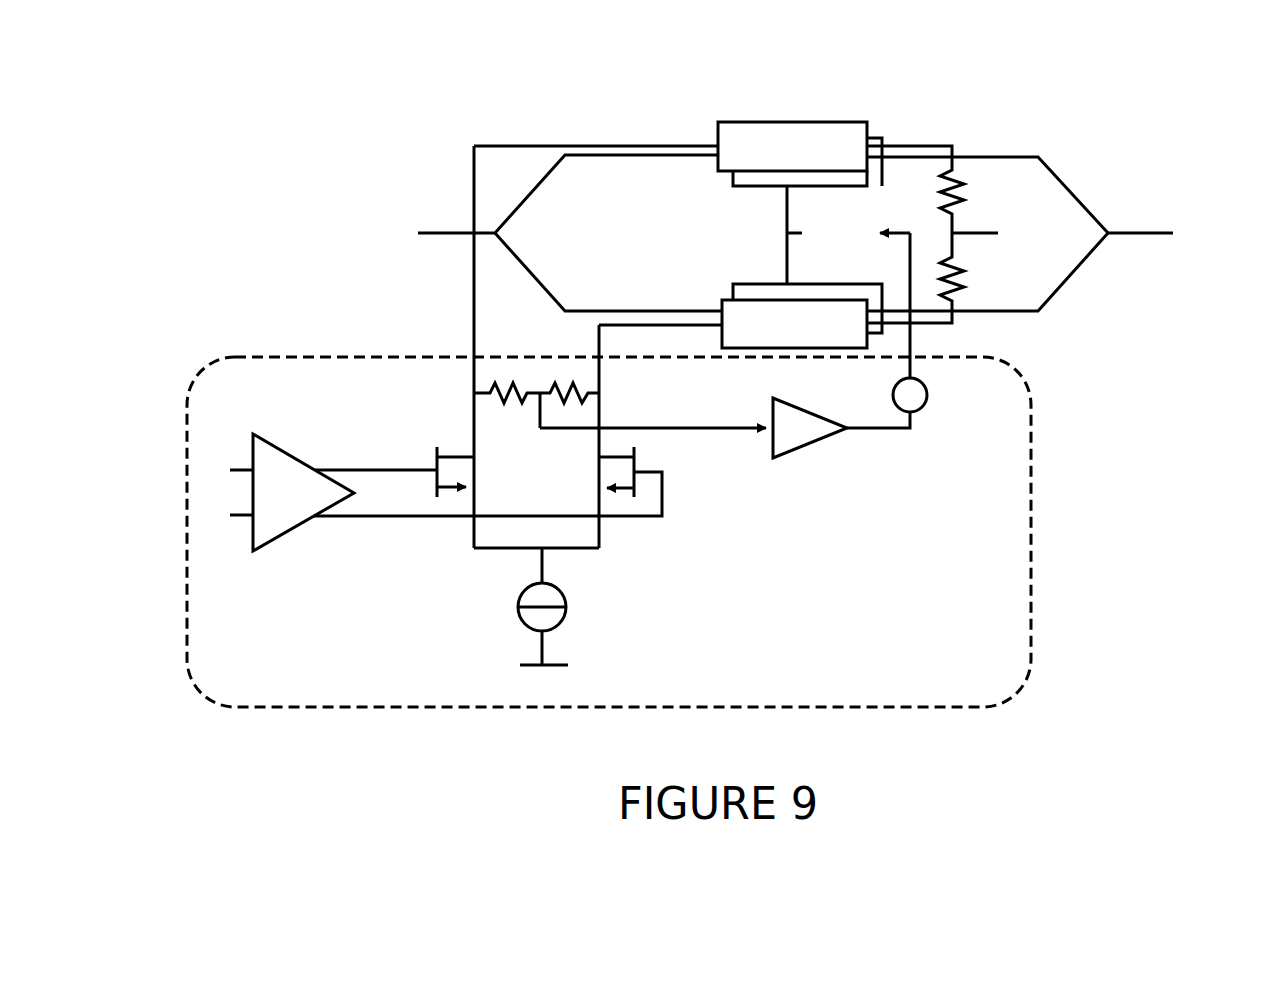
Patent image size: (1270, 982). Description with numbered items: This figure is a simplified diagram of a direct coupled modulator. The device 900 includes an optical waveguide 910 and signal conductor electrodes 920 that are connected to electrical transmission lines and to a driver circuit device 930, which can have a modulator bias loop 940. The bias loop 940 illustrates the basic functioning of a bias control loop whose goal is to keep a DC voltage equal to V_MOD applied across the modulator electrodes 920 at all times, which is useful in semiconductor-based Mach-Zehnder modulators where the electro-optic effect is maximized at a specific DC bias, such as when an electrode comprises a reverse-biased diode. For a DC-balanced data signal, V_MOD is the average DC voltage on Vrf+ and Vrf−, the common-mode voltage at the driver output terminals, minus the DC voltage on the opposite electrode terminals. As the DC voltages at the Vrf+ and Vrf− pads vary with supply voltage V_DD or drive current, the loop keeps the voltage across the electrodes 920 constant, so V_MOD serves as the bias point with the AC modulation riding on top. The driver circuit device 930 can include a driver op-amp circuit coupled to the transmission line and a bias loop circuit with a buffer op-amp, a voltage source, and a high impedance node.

The device 900 is at (398, 100).
The optical waveguide 910 is at (1022, 313).
The signal conductor electrodes 920 is at (800, 122).
The driver circuit device 930 is at (393, 357).
The modulator bias loop 940 is at (893, 430).